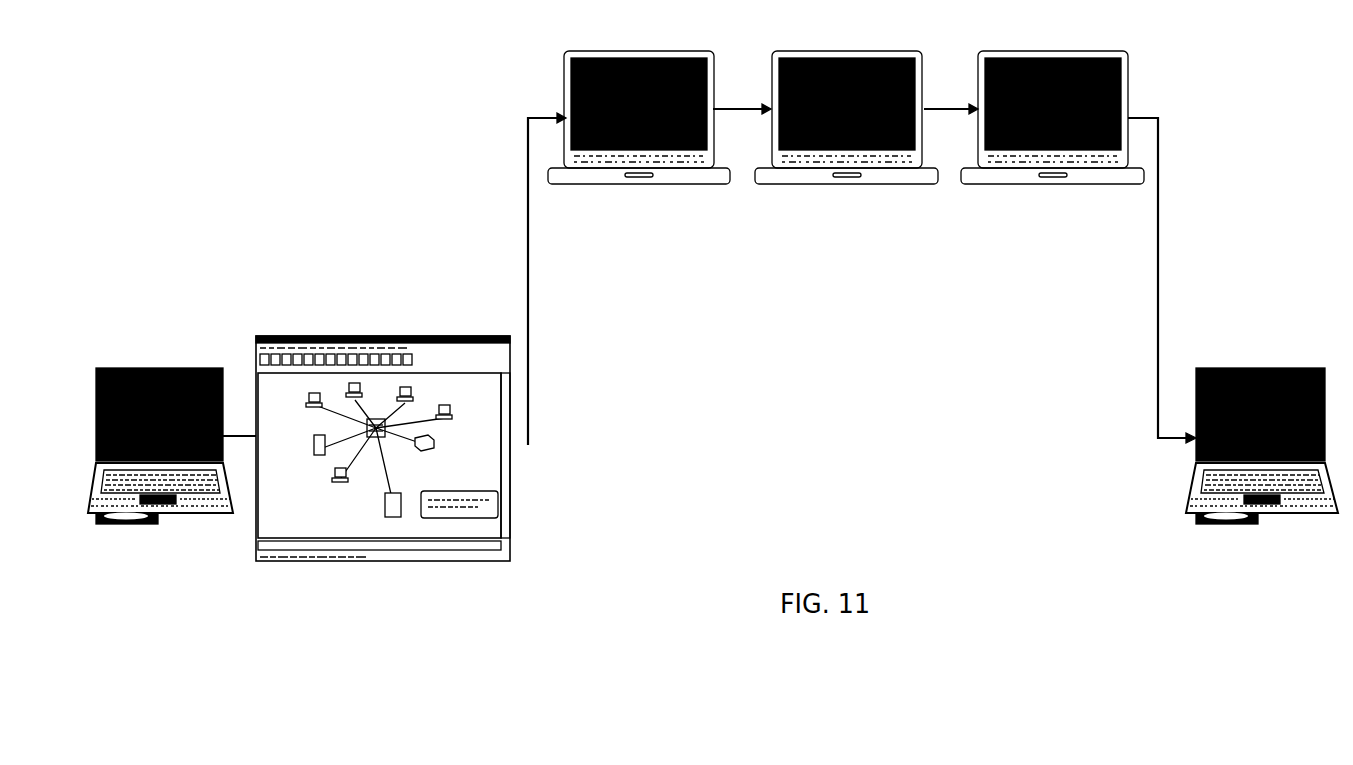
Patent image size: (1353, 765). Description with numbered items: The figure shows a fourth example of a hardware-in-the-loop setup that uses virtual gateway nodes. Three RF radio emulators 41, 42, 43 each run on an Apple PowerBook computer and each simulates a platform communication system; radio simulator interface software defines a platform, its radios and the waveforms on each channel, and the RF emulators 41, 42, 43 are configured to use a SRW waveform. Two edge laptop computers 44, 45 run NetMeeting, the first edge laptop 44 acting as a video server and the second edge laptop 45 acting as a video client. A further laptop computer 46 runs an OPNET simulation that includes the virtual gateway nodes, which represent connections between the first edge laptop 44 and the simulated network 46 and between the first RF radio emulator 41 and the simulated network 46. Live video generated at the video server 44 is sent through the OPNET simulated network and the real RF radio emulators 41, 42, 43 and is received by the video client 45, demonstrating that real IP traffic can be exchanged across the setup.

The first RF radio emulator 41 is at (634, 176).
The second RF radio emulator 42 is at (843, 176).
The third RF radio emulator 43 is at (1046, 176).
The first edge laptop computer 44 is at (158, 358).
The second edge laptop computer 45 is at (1247, 358).
The laptop computer running OPNET simulation 46 is at (502, 488).